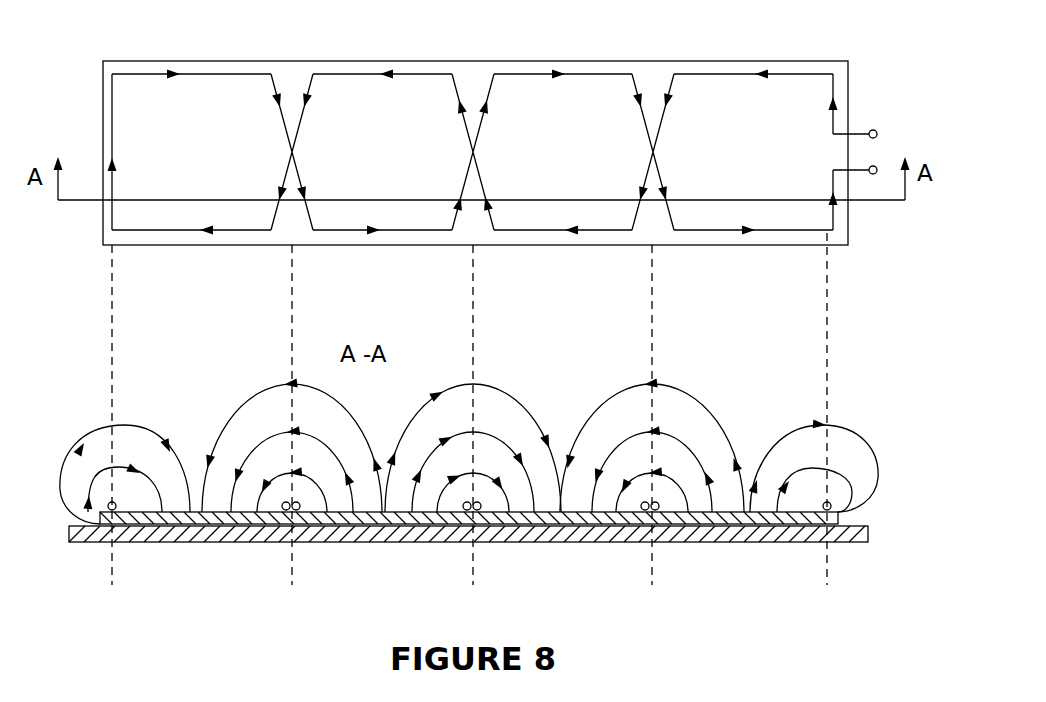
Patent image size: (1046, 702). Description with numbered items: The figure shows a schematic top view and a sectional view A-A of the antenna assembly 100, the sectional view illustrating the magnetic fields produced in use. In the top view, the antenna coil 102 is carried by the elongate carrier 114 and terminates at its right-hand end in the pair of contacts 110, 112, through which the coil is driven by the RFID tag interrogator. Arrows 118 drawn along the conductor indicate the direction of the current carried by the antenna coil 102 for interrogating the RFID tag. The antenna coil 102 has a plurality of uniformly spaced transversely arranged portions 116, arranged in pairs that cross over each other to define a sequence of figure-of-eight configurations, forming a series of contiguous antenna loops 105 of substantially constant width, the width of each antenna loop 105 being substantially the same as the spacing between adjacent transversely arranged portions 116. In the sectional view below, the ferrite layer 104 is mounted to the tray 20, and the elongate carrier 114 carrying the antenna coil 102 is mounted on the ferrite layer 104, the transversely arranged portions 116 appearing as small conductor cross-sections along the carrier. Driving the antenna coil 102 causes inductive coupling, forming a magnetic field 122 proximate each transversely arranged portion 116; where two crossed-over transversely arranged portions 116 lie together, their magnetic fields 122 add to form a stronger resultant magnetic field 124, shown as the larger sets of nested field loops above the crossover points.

The antenna assembly 100 is at (590, 58).
The antenna coil 102 is at (107, 107).
The ferrite layer 104 is at (518, 520).
The antenna loop 105 is at (343, 118).
The contact 110 is at (873, 130).
The contact 112 is at (873, 175).
The elongate carrier 114 is at (105, 152).
The transversely arranged portion 116 is at (463, 127).
The arrows 118 is at (233, 75).
The magnetic field 122 is at (67, 450).
The resultant magnetic field 124 is at (222, 430).
The tray 20 is at (82, 538).